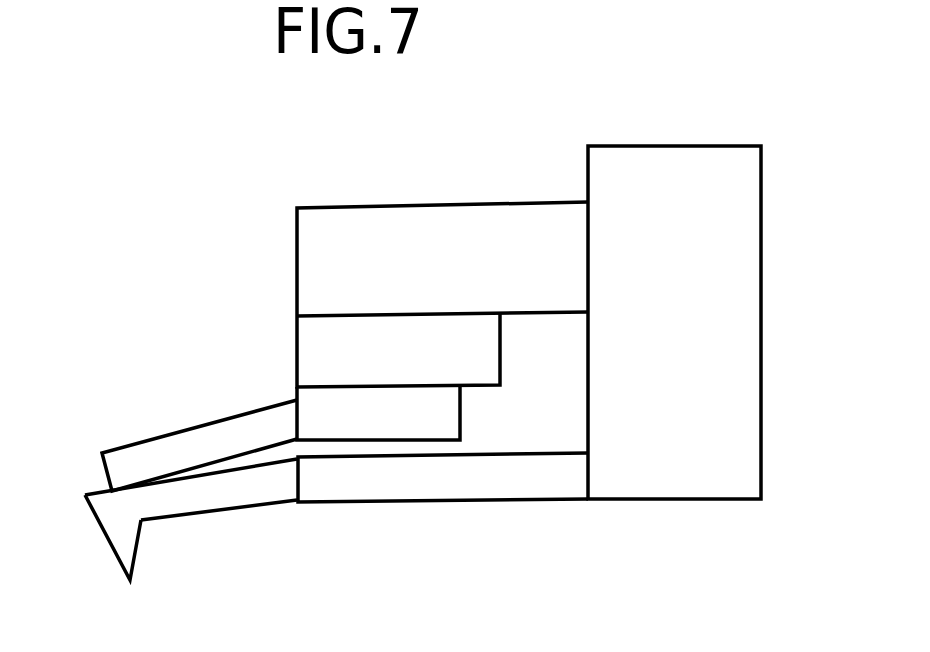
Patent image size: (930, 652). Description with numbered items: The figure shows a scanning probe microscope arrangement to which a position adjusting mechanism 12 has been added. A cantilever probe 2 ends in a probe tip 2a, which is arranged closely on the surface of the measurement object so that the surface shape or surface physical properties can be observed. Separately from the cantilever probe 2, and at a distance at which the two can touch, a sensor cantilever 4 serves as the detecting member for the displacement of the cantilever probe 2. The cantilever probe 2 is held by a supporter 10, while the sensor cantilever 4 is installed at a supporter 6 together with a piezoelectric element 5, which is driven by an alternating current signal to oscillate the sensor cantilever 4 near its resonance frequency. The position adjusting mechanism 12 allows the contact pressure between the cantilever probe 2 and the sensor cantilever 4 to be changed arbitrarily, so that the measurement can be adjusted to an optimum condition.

The cantilever probe 2 is at (203, 497).
The probe tip 2a is at (127, 555).
The sensor cantilever 4 is at (187, 453).
The piezoelectric element 5 is at (337, 362).
The supporter 6 is at (337, 420).
The supporter 10 is at (325, 282).
The position adjusting mechanism 12 is at (717, 312).